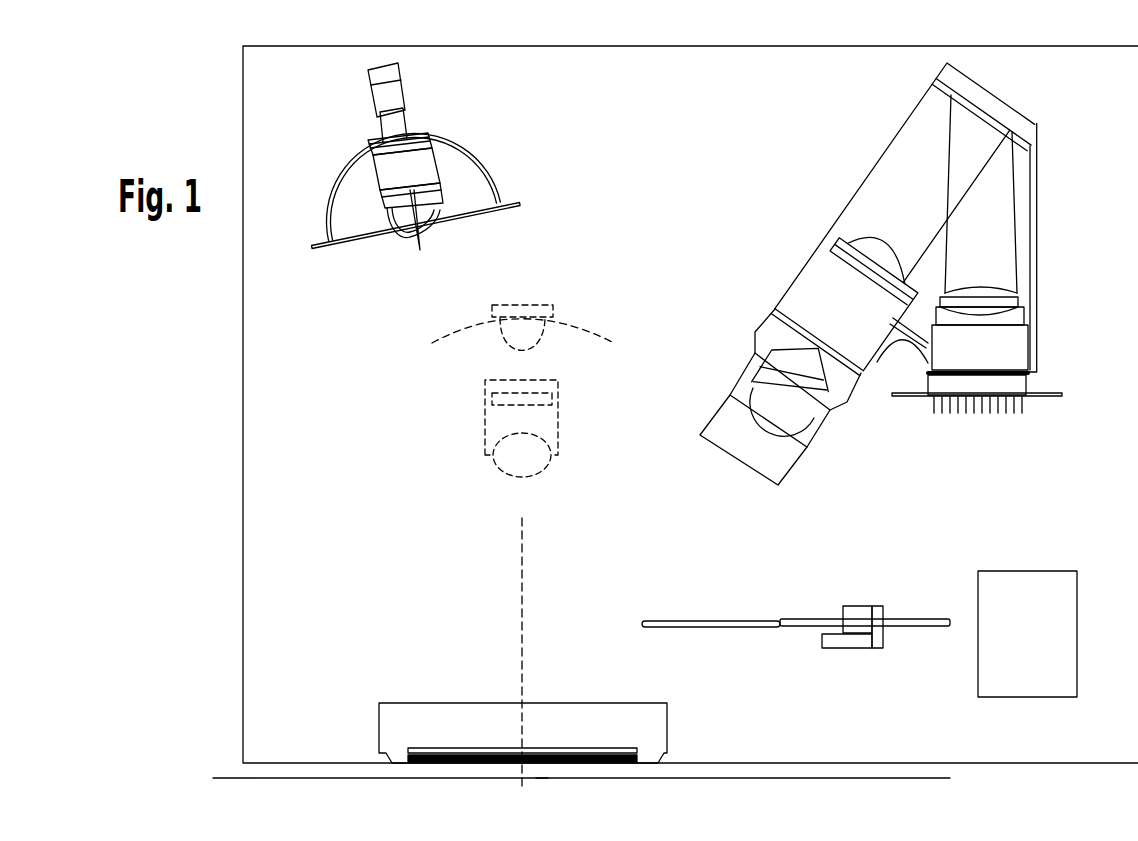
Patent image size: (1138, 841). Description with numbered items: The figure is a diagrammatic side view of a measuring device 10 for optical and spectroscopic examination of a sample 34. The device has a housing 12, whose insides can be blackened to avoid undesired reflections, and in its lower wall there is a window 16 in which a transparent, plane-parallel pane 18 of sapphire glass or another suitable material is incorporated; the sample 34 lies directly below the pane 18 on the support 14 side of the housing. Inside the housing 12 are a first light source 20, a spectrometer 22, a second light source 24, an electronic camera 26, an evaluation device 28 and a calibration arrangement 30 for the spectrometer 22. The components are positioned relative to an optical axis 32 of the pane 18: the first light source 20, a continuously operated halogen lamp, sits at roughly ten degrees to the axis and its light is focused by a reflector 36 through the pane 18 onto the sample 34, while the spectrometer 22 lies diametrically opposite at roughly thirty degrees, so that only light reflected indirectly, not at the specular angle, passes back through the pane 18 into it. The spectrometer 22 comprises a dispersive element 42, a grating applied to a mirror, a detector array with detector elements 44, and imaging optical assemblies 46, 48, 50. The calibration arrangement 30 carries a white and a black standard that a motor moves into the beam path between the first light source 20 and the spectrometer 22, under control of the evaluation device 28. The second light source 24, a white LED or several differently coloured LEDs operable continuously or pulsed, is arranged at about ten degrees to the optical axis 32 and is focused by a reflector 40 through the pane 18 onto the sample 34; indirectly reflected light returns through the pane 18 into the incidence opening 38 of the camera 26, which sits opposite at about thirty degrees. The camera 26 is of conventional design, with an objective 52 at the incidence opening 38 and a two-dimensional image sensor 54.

The measuring device 10 is at (208, 108).
The housing 12 is at (243, 352).
The base 14 is at (333, 765).
The window 16 is at (633, 733).
The pane 18 is at (493, 765).
The first light source 20 is at (386, 212).
The spectrometer 22 is at (1002, 95).
The second light source 24 is at (527, 330).
The electronic camera 26 is at (558, 413).
The evaluation device 28 is at (1038, 646).
The calibration arrangement 30 is at (922, 627).
The optical axis 32 is at (518, 611).
The sample 34 is at (542, 780).
The reflector 36 is at (468, 155).
The incidence opening 38 is at (538, 482).
The reflector 40 is at (603, 340).
The dispersive element 42 is at (990, 117).
The detector elements 44 is at (1010, 385).
The imaging optical assembly 46 is at (797, 405).
The imaging optical assembly 48 is at (870, 250).
The imaging optical assembly 50 is at (998, 305).
The objective 52 is at (508, 462).
The image sensor 54 is at (502, 402).